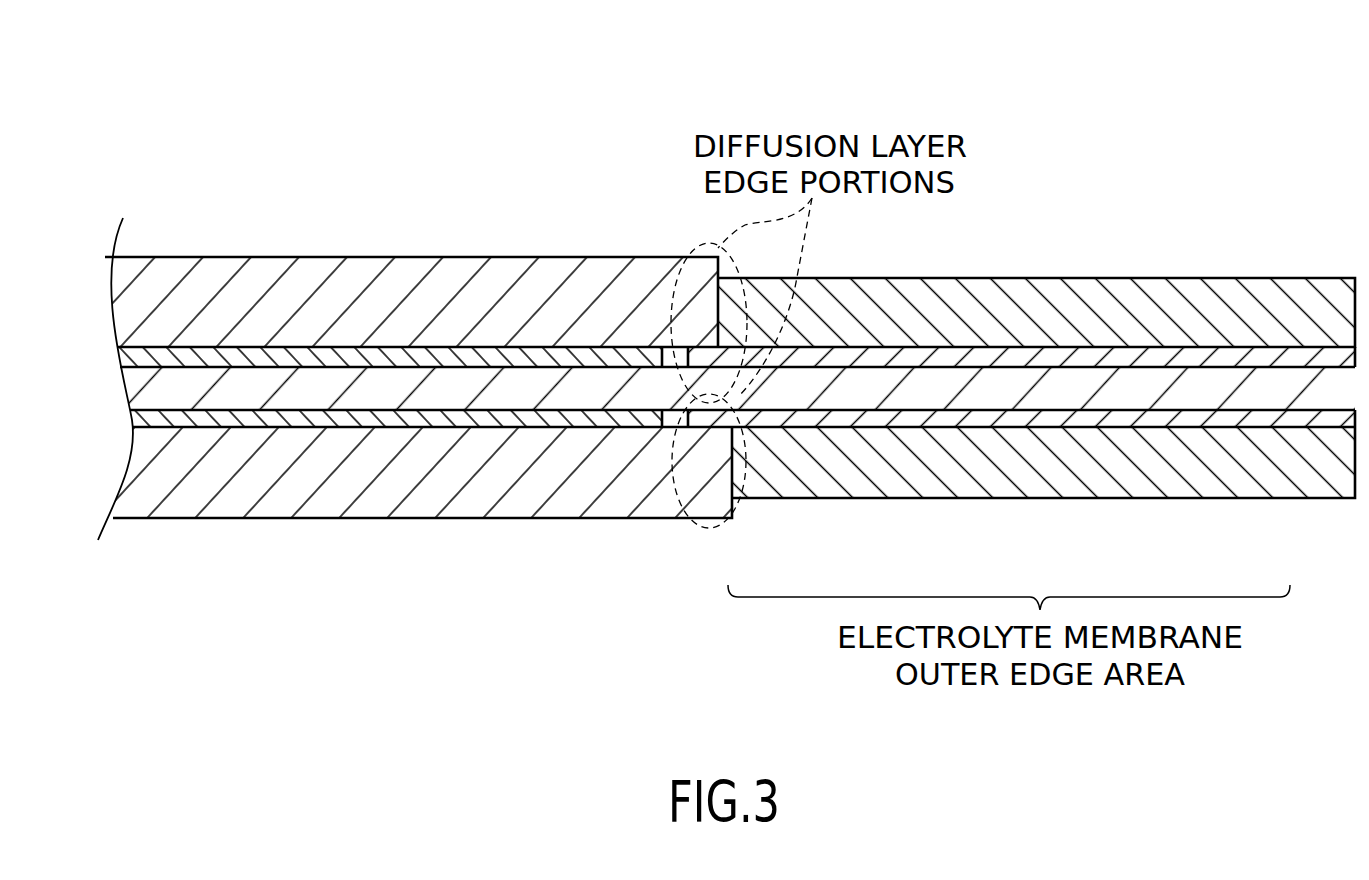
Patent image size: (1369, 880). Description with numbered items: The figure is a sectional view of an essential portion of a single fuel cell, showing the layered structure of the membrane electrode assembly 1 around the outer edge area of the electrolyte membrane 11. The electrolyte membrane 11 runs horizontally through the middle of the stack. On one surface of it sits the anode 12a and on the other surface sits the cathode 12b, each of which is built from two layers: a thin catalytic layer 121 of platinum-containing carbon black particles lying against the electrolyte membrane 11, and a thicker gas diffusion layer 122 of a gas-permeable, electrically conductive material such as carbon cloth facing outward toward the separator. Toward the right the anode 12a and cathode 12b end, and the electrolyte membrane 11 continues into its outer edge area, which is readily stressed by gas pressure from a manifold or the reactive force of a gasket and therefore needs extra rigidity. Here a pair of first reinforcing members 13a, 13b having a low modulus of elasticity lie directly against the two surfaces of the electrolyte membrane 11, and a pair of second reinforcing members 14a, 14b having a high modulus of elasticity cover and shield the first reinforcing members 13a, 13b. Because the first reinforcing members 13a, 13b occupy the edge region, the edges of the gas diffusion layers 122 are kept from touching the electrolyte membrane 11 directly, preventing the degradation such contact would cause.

The electrolyte membrane 1 is at (1010, 128).
The electrolyte membrane 11 is at (613, 387).
The anode 12a is at (385, 612).
The cathode 12b is at (385, 167).
The catalytic layer 121 is at (407, 357).
The gas diffusion layer 122 is at (522, 287).
The first reinforcing member 13a is at (1102, 428).
The first reinforcing member 13b is at (1098, 358).
The second reinforcing member 14a is at (993, 482).
The second reinforcing member 14b is at (993, 303).